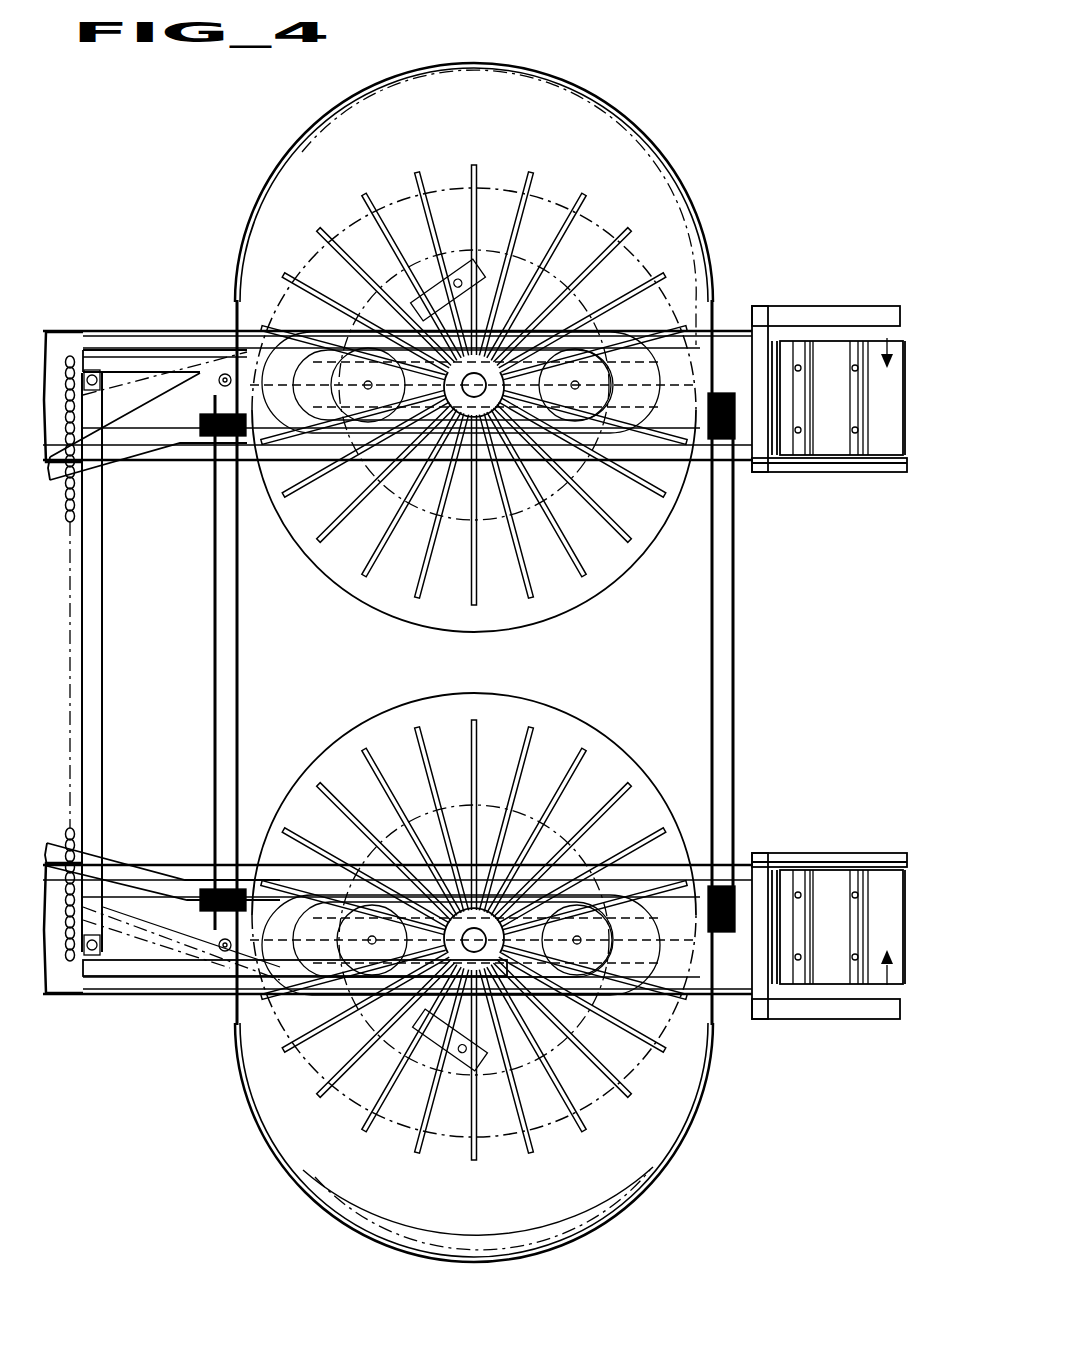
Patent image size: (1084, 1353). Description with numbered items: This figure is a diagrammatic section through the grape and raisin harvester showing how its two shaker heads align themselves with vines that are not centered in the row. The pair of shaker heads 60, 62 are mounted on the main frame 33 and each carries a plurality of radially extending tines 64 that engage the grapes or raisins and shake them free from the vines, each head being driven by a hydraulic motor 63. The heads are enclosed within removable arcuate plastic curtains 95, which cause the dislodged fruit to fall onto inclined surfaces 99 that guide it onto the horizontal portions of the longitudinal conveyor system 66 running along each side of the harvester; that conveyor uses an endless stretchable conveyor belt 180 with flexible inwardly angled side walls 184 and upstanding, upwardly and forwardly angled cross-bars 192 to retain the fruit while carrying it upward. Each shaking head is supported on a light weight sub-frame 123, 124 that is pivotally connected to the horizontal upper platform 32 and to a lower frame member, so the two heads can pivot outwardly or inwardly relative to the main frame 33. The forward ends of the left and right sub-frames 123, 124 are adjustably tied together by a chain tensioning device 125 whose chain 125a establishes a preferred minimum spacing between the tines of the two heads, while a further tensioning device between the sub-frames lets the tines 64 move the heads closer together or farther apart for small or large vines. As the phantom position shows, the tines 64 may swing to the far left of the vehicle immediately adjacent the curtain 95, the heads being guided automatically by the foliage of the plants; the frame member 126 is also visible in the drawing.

The horizontal upper platform 32 is at (137, 448).
The main frame 33 is at (772, 308).
The shaker head 60 is at (643, 784).
The shaker head 62 is at (578, 180).
The hydraulic motor 63 is at (487, 372).
The tines 64 is at (420, 172).
The longitudinal conveyor system 66 is at (817, 468).
The arcuate plastic curtain 95 is at (569, 82).
The inclined surface 99 is at (350, 127).
The sub-frame 123 is at (130, 372).
The sub-frame 124 is at (215, 998).
The chain tensioning device 125 is at (86, 505).
The chain 125a is at (94, 813).
The frame member 126 is at (103, 672).
The endless stretchable conveyor belt 180 is at (887, 340).
The side walls 184 is at (832, 340).
The cross-bars 192 is at (866, 455).